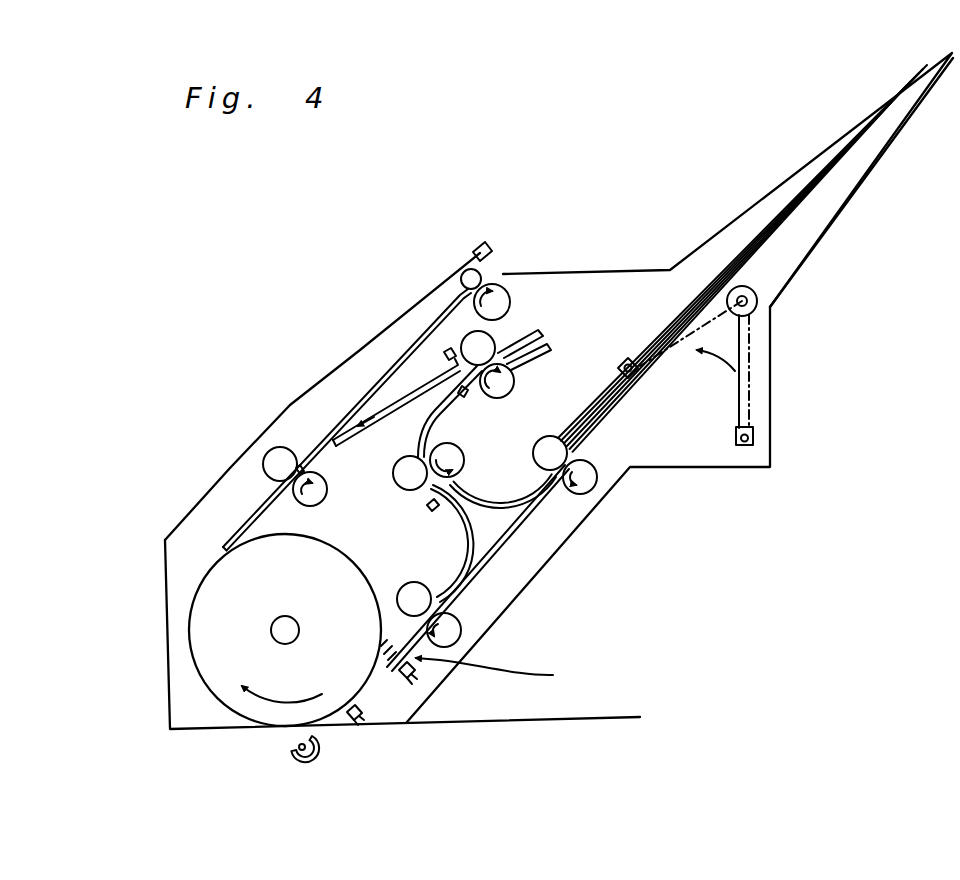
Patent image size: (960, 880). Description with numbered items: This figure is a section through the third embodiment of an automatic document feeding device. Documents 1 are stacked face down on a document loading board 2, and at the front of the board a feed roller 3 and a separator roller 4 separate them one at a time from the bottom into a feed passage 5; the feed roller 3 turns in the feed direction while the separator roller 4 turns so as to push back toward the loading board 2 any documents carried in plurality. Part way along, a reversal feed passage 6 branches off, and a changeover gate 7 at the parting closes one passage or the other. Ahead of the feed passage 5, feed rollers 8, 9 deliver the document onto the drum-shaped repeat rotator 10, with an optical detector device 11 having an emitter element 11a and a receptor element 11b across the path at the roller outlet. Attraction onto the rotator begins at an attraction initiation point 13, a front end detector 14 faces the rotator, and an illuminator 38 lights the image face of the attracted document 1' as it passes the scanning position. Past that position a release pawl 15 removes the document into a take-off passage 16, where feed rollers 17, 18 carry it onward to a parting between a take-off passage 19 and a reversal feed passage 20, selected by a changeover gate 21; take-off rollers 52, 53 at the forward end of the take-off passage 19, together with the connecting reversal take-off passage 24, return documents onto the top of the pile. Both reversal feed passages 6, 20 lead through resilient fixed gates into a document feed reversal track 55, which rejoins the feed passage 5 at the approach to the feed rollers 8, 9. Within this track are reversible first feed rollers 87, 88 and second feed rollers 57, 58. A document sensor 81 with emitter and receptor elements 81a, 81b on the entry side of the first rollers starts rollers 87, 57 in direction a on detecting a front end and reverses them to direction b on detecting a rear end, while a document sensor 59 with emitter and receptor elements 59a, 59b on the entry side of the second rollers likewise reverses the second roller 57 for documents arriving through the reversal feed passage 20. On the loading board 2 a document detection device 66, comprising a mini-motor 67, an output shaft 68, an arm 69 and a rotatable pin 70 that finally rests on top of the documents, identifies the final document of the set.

The document 1 is at (742, 257).
The document held on repeat rotator 1' is at (757, 268).
The document loading board 2 is at (848, 165).
The feed roller 3 is at (598, 478).
The separator roller 4 is at (556, 438).
The feed passage 5 is at (518, 530).
The reversal feed passage 6 is at (498, 513).
The changeover gate 7 is at (537, 502).
The feed roller 8 is at (440, 590).
The feed roller 9 is at (455, 631).
The repeat rotator 10 is at (331, 718).
The optical detector device 11 is at (501, 677).
The emitter element 11a is at (442, 674).
The receptor element 11b is at (385, 668).
The attraction initiation point 13 is at (381, 678).
The front end detector 14 is at (353, 716).
The release pawl 15 is at (245, 533).
The take-off passage 16 is at (262, 522).
The feed roller 17 is at (297, 465).
The feed roller 18 is at (278, 458).
The take-off passage 19 is at (399, 405).
The reversal feed passage 20 is at (402, 414).
The changeover gate 21 is at (333, 437).
The connecting reversal take-off passage 24 is at (462, 495).
The illuminator 38 is at (303, 762).
The take-off roller 52 is at (497, 290).
The take-off roller 53 is at (471, 268).
The document feed reversal track 55 is at (414, 440).
The second feed roller 57 is at (514, 376).
The second feed roller 58 is at (493, 337).
The document sensor 59 is at (446, 364).
The emitter element 59a is at (442, 352).
The receptor element 59b is at (465, 394).
The document detection device 66 is at (760, 330).
The mini-motor 67 is at (758, 301).
The output shaft 68 is at (752, 286).
The arm 69 is at (748, 386).
The rotatable pin 70 is at (754, 437).
The document sensor 81 is at (440, 512).
The emitter element 81a is at (424, 508).
The receptor element 81b is at (458, 484).
The first feed roller 87 is at (394, 478).
The first feed roller 88 is at (318, 482).